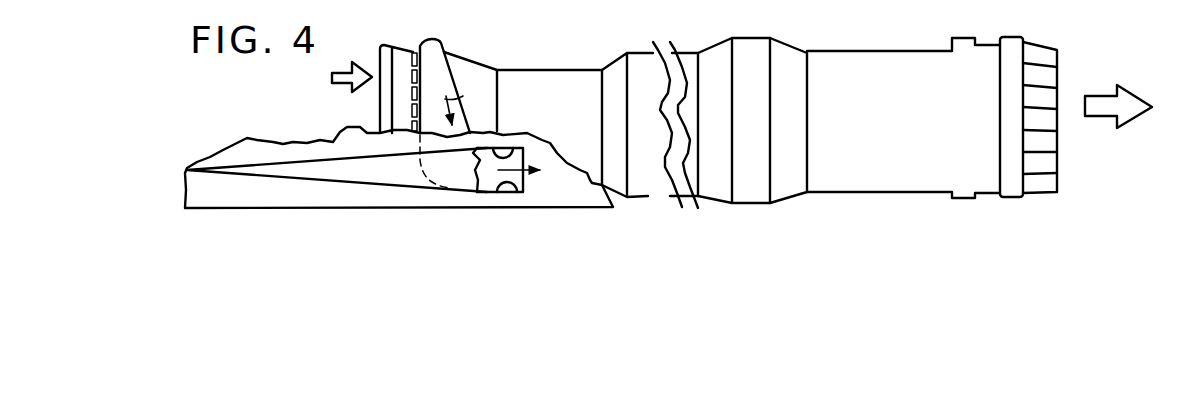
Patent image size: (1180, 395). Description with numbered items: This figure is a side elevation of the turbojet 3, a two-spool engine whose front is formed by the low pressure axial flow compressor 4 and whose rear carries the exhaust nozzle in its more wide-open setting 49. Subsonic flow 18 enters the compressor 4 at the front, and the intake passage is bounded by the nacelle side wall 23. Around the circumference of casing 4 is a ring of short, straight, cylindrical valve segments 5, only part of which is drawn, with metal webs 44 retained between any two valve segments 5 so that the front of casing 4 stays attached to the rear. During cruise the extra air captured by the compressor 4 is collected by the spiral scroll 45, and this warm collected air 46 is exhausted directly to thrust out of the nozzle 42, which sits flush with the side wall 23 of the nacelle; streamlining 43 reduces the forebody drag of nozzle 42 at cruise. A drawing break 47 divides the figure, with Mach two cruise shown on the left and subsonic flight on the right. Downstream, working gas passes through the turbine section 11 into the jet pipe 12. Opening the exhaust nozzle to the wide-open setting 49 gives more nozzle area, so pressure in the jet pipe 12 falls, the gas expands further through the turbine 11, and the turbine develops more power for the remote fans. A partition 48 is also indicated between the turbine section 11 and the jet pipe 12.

The turbojet 3 is at (540, 65).
The axial flow compressor 4 is at (467, 60).
The valve segments 5 is at (415, 48).
The turbine section 11 is at (717, 140).
The jet pipe 12 is at (915, 131).
The subsonic flow 18 is at (331, 77).
The nacelle side wall 23 is at (290, 143).
The nozzle 42 is at (504, 149).
The streamlining 43 is at (262, 171).
The metal webs 44 is at (412, 107).
The spiral scroll 45 is at (443, 43).
The collected air 46 is at (467, 101).
The drawing break 47 is at (657, 42).
The partition 48 is at (773, 130).
The wide-open setting 49 is at (1057, 48).